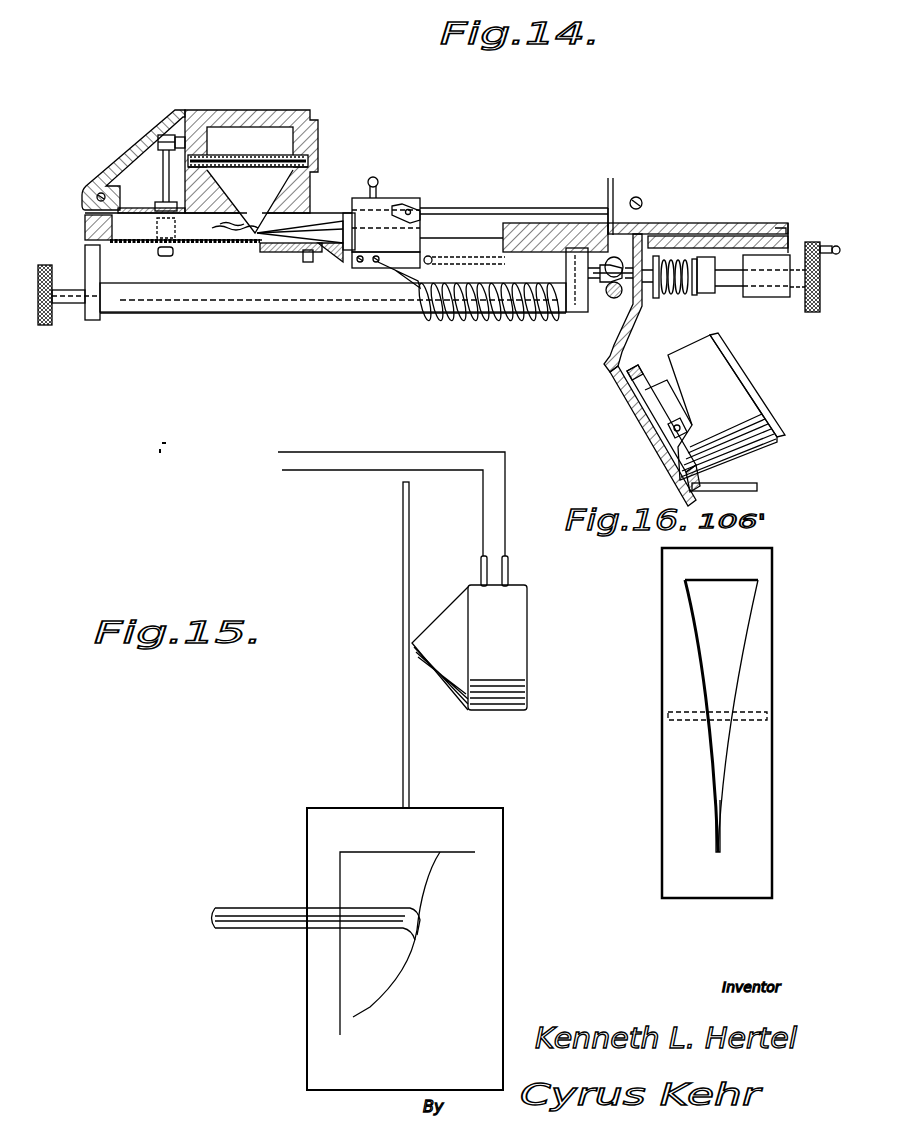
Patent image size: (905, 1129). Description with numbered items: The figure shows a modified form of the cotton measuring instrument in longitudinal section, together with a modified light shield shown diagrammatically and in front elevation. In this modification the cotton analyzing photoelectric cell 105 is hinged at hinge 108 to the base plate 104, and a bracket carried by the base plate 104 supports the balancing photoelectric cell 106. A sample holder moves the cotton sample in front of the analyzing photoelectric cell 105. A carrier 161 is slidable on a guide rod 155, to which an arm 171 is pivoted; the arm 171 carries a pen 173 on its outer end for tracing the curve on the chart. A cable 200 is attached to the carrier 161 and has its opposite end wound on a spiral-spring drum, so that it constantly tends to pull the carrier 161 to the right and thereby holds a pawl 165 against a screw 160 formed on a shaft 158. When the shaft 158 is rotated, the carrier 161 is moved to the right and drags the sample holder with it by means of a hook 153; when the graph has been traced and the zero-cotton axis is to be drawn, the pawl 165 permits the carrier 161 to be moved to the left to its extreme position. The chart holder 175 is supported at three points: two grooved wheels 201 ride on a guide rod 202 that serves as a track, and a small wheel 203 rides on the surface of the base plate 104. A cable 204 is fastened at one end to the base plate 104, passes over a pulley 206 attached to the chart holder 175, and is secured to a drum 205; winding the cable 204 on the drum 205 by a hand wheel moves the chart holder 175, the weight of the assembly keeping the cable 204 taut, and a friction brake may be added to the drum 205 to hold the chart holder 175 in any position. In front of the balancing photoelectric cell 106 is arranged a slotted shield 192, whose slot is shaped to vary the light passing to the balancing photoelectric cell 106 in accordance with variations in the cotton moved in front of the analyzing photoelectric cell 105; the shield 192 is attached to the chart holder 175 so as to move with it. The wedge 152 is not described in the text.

In FIG. 14, the base plate 104 is at (95, 225).
In FIG. 14, the cotton analyzing photoelectric cell 105 is at (276, 103).
In FIG. 16, the cotton analyzing photoelectric cell 105 is at (730, 669).
In FIG. 14, the balancing photoelectric cell 106 is at (725, 385).
In FIG. 15, the balancing photoelectric cell 106 is at (515, 613).
In FIG. 14, the hinge 108 is at (93, 183).
In FIG. 14, the feed plate 152 is at (343, 227).
In FIG. 14, the hook 153 is at (340, 262).
In FIG. 14, the guide rod 155 is at (457, 218).
In FIG. 14, the shaft 158 is at (177, 300).
In FIG. 14, the screw 160 is at (518, 323).
In FIG. 14, the carrier 161 is at (386, 210).
In FIG. 14, the pawl 165 is at (402, 270).
In FIG. 14, the arm 171 is at (508, 197).
In FIG. 14, the pen 173 is at (645, 185).
In FIG. 14, the chart holder 175 is at (693, 225).
In FIG. 15, the slotted shield 192 is at (403, 578).
In FIG. 16, the slotted shield 192 is at (742, 786).
In FIG. 14, the cable 200 is at (467, 323).
In FIG. 14, the grooved wheels 201 is at (587, 321).
In FIG. 14, the guide rod 202 is at (606, 300).
In FIG. 14, the small wheel 203 is at (790, 238).
In FIG. 14, the cable 204 is at (683, 296).
In FIG. 14, the drum 205 is at (713, 289).
In FIG. 14, the pulley 206 is at (645, 242).